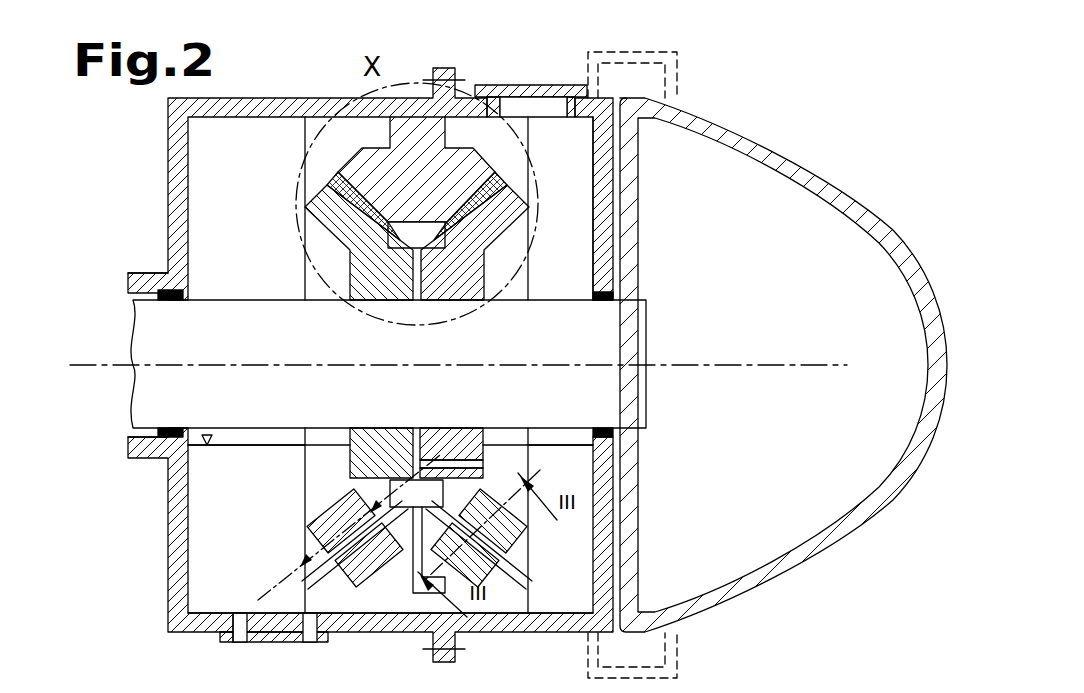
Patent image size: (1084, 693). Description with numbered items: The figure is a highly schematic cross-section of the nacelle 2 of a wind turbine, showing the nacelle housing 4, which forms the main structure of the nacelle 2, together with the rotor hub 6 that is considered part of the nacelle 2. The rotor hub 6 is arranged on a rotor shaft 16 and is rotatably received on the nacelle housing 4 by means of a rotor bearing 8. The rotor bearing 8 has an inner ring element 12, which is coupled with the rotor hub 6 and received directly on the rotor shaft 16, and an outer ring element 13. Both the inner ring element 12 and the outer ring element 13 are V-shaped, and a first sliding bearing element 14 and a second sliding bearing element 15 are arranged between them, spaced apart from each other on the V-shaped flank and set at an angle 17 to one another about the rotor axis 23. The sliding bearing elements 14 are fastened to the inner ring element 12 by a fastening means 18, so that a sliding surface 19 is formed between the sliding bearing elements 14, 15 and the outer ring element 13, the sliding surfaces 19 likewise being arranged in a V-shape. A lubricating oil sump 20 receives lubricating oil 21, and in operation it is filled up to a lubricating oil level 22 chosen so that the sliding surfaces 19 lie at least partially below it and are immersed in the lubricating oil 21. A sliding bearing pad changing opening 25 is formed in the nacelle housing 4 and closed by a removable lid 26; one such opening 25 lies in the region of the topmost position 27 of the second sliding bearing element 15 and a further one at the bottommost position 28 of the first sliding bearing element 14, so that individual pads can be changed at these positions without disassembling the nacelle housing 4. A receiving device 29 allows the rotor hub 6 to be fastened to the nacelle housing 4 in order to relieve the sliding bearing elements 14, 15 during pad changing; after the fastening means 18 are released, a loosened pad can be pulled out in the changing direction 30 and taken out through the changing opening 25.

The nacelle 2 is at (776, 76).
The nacelle housing 4 is at (175, 597).
The rotor hub 6 is at (797, 562).
The rotor bearing 8 is at (288, 490).
The inner ring element 12 is at (375, 445).
The outer ring element 13 is at (362, 555).
The first sliding bearing element 14 is at (335, 450).
The second sliding bearing element 15 is at (528, 523).
The rotor shaft 16 is at (145, 357).
The angle 17 is at (412, 592).
The fastening means 18 is at (208, 638).
The sliding surface 19 is at (375, 565).
The lubricating oil sump 20 is at (276, 422).
The lubricating oil 21 is at (213, 527).
The lubricating oil level 22 is at (247, 443).
The rotor axis 23 is at (828, 361).
The sliding bearing pad changing opening 25 is at (569, 136).
The lid 26 is at (548, 96).
The topmost position 27 is at (506, 160).
The bottommost position 28 is at (252, 643).
The receiving device 29 is at (678, 51).
The changing direction 30 is at (330, 530).